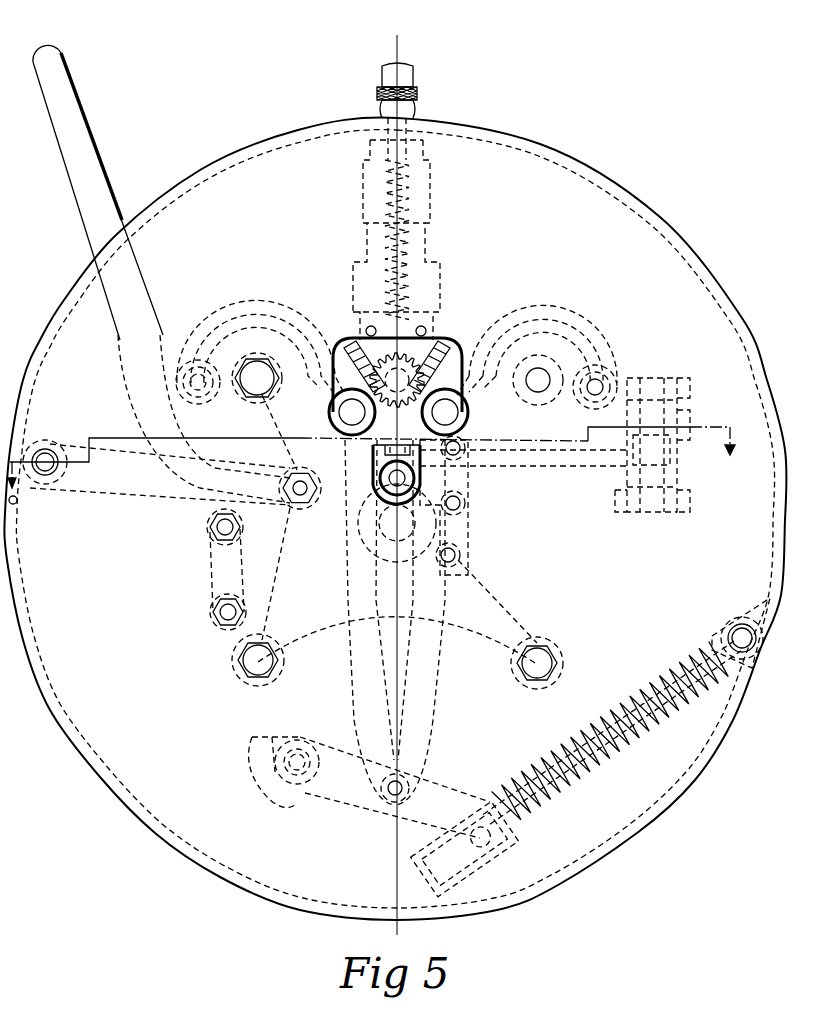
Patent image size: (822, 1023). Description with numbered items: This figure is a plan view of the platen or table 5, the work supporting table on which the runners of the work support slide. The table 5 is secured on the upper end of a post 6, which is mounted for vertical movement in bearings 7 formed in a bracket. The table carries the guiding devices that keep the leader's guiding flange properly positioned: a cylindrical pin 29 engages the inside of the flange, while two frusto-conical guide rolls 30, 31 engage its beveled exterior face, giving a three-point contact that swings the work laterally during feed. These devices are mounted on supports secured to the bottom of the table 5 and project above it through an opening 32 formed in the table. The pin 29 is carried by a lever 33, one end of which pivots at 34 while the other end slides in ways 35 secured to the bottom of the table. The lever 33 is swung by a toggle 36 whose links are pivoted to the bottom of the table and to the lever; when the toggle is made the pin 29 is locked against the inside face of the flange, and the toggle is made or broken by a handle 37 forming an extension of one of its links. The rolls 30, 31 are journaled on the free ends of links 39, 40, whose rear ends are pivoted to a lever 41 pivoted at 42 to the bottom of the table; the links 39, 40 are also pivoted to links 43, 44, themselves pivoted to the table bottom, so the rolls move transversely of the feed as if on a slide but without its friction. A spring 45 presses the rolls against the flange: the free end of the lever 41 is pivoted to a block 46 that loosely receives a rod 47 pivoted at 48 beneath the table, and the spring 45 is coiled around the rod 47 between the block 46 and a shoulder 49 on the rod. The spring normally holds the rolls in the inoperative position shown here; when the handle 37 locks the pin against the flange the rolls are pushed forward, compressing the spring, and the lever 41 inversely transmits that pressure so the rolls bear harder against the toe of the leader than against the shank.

The platen or table 5 is at (580, 172).
The post 6 is at (371, 465).
The bearings 7 is at (396, 483).
The cylindrical pin 29 is at (412, 480).
The guide roll 30 is at (329, 413).
The guide roll 31 is at (468, 414).
The opening 32 is at (447, 348).
The lever 33 is at (120, 494).
The pivot 34 is at (48, 484).
The ways 35 is at (468, 522).
The toggle 36 is at (207, 583).
The handle 37 is at (75, 93).
The link 39 is at (352, 692).
The link 40 is at (440, 701).
The lever 41 is at (358, 815).
The pivot 42 is at (280, 782).
The link 43 is at (248, 297).
The link 44 is at (548, 302).
The spring 45 is at (580, 789).
The block 46 is at (472, 872).
The rod 47 is at (630, 753).
The pivot 48 is at (732, 626).
The shoulder 49 is at (712, 636).